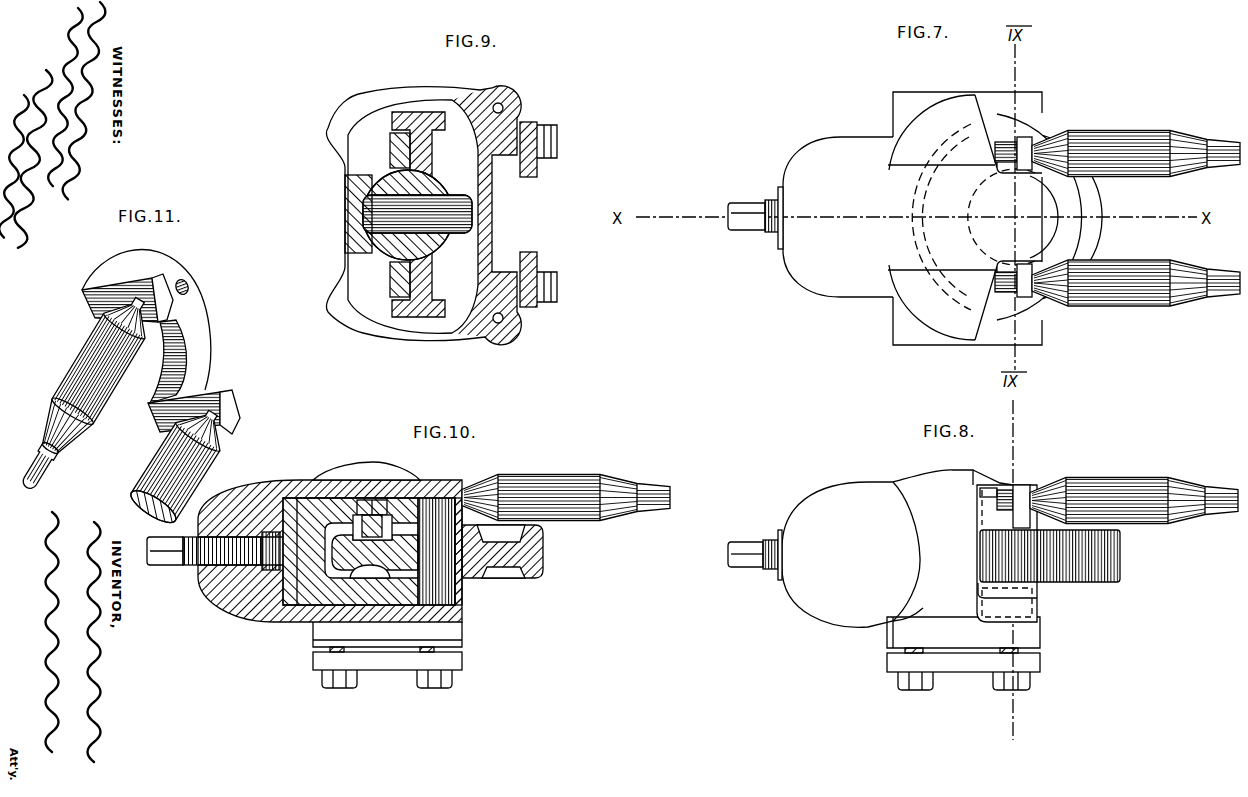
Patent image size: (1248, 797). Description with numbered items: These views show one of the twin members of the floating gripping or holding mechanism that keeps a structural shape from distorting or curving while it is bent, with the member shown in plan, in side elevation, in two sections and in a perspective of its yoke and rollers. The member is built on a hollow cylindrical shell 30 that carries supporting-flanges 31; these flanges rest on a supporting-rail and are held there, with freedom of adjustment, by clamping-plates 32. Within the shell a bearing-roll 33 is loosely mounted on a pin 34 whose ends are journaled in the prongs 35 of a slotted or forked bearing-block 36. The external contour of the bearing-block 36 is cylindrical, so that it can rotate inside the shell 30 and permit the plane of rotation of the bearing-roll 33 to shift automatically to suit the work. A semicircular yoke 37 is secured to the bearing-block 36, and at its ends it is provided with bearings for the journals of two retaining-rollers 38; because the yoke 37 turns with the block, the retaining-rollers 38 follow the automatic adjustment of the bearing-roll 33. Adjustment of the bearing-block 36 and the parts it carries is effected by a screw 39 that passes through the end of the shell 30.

In FIG. 7, the hollow cylindrical shell 30 is at (838, 217).
In FIG. 8, the hollow cylindrical shell 30 is at (897, 548).
In FIG. 10, the hollow cylindrical shell 30 is at (267, 483).
In FIG. 7, the supporting-flanges 31 is at (965, 218).
In FIG. 8, the supporting-flanges 31 is at (963, 632).
In FIG. 9, the supporting-flanges 31 is at (423, 215).
In FIG. 10, the supporting-flanges 31 is at (323, 628).
In FIG. 8, the clamping-plates 32 is at (973, 660).
In FIG. 9, the clamping-plates 32 is at (540, 172).
In FIG. 10, the clamping-plates 32 is at (397, 660).
In FIG. 7, the bearing-roll 33 is at (1118, 239).
In FIG. 8, the bearing-roll 33 is at (1102, 577).
In FIG. 9, the bearing-roll 33 is at (430, 305).
In FIG. 10, the bearing-roll 33 is at (545, 567).
In FIG. 7, the pin 34 is at (1013, 217).
In FIG. 9, the pin 34 is at (378, 217).
In FIG. 10, the pin 34 is at (455, 483).
In FIG. 8, the prongs 35 is at (988, 518).
In FIG. 9, the prongs 35 is at (370, 188).
In FIG. 10, the prongs 35 is at (460, 597).
In FIG. 10, the bearing-block 36 is at (322, 482).
In FIG. 7, the semicircular yoke 37 is at (1007, 140).
In FIG. 9, the semicircular yoke 37 is at (397, 145).
In FIG. 10, the semicircular yoke 37 is at (407, 490).
In FIG. 11, the semicircular yoke 37 is at (204, 330).
In FIG. 7, the retaining-rollers 38 is at (1100, 150).
In FIG. 8, the retaining-rollers 38 is at (1112, 490).
In FIG. 10, the retaining-rollers 38 is at (562, 493).
In FIG. 11, the retaining-rollers 38 is at (75, 365).
In FIG. 7, the screw 39 is at (743, 210).
In FIG. 8, the screw 39 is at (747, 547).
In FIG. 10, the screw 39 is at (185, 565).